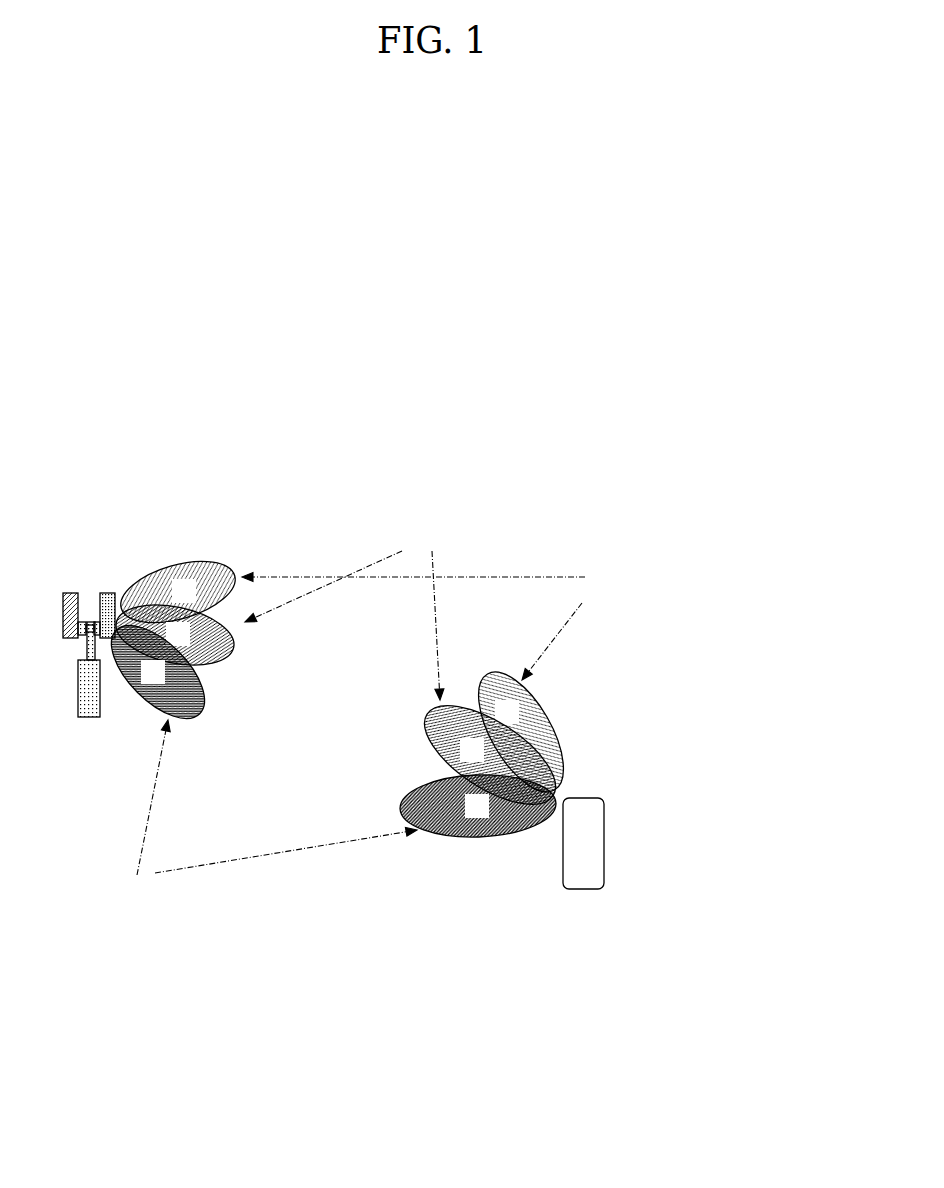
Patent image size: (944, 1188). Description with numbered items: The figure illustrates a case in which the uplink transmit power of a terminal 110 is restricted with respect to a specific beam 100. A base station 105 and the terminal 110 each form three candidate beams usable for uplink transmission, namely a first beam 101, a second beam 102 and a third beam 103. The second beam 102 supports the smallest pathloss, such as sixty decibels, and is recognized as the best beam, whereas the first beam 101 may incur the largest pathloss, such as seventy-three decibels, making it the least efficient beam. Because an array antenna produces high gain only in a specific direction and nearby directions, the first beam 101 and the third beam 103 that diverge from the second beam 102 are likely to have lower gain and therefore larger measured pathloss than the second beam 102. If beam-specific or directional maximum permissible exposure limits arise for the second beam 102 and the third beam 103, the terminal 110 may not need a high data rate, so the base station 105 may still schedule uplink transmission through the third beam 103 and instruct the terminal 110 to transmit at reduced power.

The specific beam 100 is at (586, 1047).
The B1 101 is at (197, 565).
The B2 102 is at (198, 663).
The B3 103 is at (183, 720).
The base station 105 is at (62, 648).
The terminal 110 is at (583, 898).